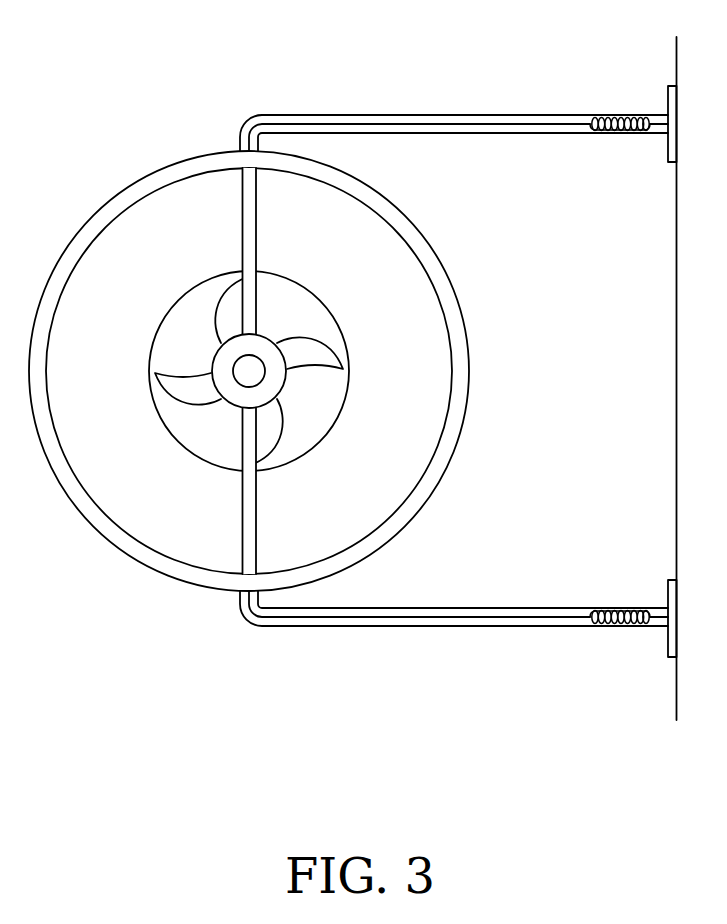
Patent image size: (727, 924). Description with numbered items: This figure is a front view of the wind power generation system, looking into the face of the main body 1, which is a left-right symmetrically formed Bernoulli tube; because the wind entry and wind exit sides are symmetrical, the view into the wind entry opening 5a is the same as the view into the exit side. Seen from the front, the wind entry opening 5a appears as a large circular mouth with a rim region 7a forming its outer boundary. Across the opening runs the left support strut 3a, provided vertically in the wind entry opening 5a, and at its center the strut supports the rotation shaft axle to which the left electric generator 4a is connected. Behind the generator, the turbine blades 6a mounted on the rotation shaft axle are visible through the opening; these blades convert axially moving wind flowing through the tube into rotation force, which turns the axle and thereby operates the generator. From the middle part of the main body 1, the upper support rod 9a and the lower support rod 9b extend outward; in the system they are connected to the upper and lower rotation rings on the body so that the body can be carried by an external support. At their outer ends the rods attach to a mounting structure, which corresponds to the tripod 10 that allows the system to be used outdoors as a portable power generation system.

The main body 1 is at (137, 553).
The left support strut 3a is at (242, 205).
The left electric generator 4a is at (215, 361).
The wind entry opening 5a is at (403, 405).
The turbine blades 6a is at (308, 350).
The housing rim 7a is at (452, 318).
The upper support rod 9a is at (397, 124).
The lower support rod 9b is at (405, 617).
The tripod 10 is at (555, 126).